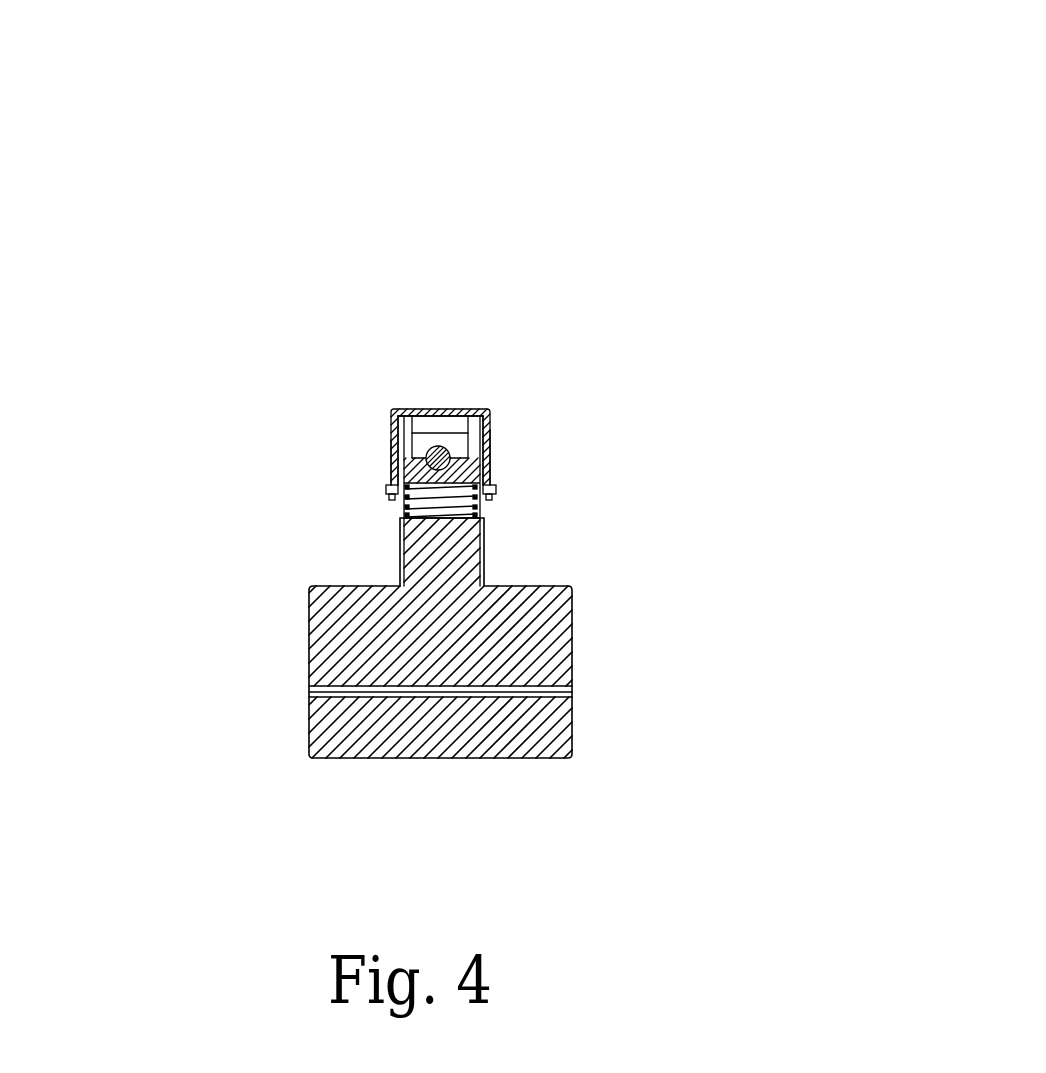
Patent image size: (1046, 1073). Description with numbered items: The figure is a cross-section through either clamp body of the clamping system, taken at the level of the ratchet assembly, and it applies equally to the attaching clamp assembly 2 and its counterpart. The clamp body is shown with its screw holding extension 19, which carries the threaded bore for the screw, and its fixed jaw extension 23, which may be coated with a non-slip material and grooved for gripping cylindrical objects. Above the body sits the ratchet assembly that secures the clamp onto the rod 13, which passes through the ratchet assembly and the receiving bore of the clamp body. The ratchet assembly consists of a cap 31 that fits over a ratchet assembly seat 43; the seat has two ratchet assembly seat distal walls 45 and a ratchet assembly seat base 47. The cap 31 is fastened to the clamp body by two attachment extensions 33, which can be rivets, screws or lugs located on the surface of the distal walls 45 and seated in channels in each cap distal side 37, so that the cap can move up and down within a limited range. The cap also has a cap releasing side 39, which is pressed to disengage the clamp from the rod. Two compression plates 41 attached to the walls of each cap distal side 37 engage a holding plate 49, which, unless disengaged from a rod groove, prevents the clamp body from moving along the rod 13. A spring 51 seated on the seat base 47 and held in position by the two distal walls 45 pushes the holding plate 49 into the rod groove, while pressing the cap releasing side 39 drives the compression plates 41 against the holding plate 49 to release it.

The attaching clamp assembly 2 is at (481, 548).
The rod 13 is at (436, 447).
The screw holding extension 19 is at (572, 692).
The fixed jaw extension 23 is at (572, 624).
The cap 31 is at (430, 408).
The attachment extension 33 is at (401, 487).
The cap distal side 37 is at (392, 447).
The cap releasing side 39 is at (468, 408).
The compression plate 41 is at (482, 408).
The ratchet assembly seat 43 is at (487, 505).
The ratchet assembly seat distal wall 45 is at (403, 511).
The ratchet assembly seat base 47 is at (403, 507).
The holding plate 49 is at (392, 408).
The spring 51 is at (403, 515).